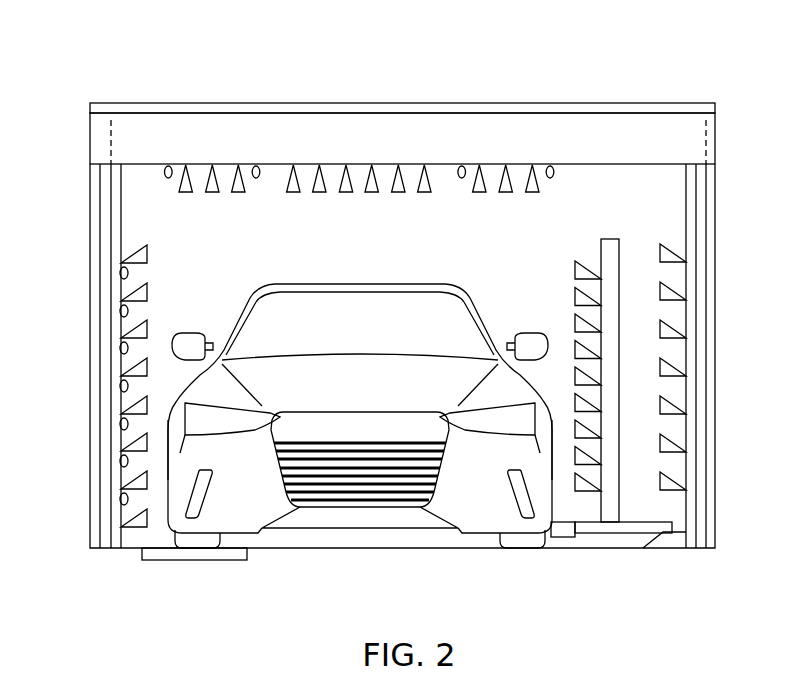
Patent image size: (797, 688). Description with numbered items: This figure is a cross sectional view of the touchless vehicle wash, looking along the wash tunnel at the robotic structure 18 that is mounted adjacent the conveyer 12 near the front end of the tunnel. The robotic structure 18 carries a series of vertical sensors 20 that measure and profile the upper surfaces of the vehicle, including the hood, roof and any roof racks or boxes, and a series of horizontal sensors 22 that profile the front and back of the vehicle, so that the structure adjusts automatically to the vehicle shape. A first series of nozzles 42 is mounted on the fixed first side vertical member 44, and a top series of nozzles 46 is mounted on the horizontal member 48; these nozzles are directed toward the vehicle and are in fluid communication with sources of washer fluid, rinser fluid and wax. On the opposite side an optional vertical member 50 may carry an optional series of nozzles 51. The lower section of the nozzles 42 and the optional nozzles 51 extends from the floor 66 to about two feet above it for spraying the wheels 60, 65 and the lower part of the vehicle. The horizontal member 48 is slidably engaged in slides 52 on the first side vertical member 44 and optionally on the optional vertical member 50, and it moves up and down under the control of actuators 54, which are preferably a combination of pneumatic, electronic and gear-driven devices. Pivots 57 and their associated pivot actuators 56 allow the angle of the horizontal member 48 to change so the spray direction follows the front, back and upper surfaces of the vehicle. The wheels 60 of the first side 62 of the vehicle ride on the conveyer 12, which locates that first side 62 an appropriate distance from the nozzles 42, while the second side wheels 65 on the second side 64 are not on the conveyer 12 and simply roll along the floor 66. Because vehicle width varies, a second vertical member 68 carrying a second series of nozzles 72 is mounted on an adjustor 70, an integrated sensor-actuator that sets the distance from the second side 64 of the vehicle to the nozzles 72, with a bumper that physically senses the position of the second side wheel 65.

The conveyer 12 is at (227, 553).
The robotic structure 18 is at (91, 38).
The vertical sensors 20 is at (125, 273).
The horizontal sensors 22 is at (553, 170).
The first series of nozzles 42 is at (142, 296).
The first side vertical member 44 is at (107, 365).
The top series of nozzles 46 is at (482, 165).
The horizontal member 48 is at (260, 125).
The optional vertical member 50 is at (701, 394).
The optional series of nozzles 51 is at (672, 363).
The slides 52 is at (117, 209).
The actuators 54 is at (710, 212).
The pivot actuators 56 is at (100, 135).
The pivots 57 is at (163, 108).
The wheels of the first side 60 is at (178, 540).
The first side of the vehicle 62 is at (168, 422).
The second side of the vehicle 64 is at (552, 428).
The second side wheels 65 is at (517, 540).
The floor 66 is at (572, 550).
The second vertical member 68 is at (608, 463).
The adjustor 70 is at (657, 527).
The second series of nozzles 72 is at (583, 300).